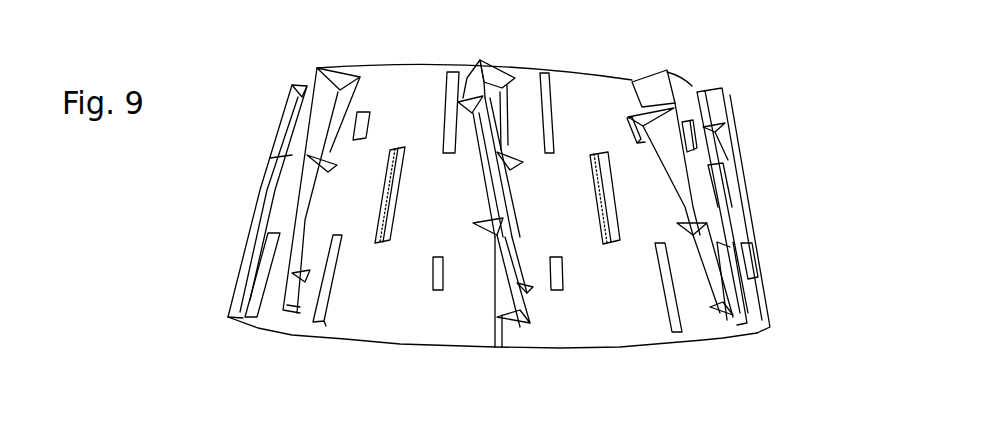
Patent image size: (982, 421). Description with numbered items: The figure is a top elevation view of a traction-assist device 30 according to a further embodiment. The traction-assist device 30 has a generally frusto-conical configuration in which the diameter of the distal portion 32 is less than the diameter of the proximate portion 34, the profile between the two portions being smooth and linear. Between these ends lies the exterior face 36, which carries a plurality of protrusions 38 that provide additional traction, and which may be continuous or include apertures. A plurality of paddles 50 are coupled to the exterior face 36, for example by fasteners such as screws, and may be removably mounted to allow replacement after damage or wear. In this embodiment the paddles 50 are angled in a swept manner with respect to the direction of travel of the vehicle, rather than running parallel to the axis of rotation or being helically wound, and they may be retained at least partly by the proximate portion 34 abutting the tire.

The traction-assist device 30 is at (650, 348).
The distal portion 32 is at (689, 85).
The proximate portion 34 is at (768, 327).
The exterior face 36 is at (378, 317).
The protrusions 38 is at (405, 150).
The paddles 50 is at (482, 62).